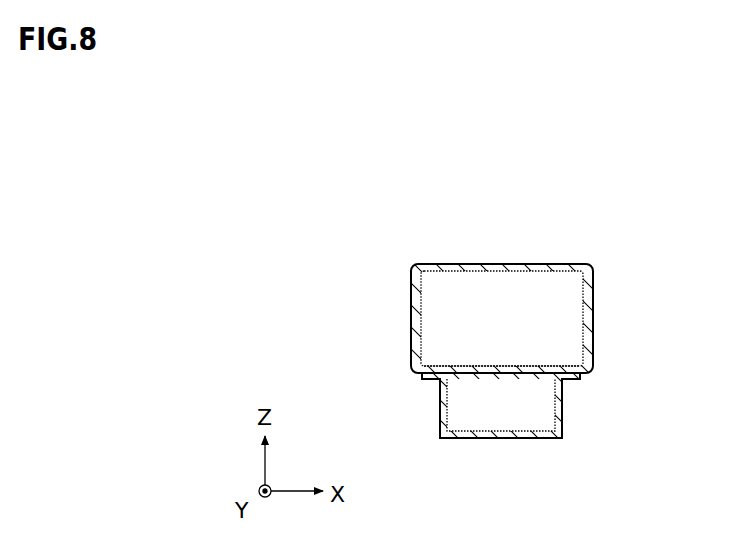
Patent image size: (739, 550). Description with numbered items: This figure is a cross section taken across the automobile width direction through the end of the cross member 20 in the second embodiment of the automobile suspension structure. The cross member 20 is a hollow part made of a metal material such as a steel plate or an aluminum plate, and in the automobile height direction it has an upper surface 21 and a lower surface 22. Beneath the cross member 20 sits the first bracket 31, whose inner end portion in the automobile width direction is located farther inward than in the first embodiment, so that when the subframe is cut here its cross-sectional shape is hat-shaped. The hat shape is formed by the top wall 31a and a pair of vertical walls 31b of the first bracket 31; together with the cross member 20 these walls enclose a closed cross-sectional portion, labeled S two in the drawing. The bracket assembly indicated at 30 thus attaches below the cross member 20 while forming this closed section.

The cross member 20 is at (492, 292).
The upper surface 21 is at (501, 264).
The lower surface 22 is at (507, 366).
The tray member 30 is at (507, 438).
The first bracket 31 is at (507, 432).
The top wall 31a is at (505, 438).
The vertical walls 31b is at (440, 398).